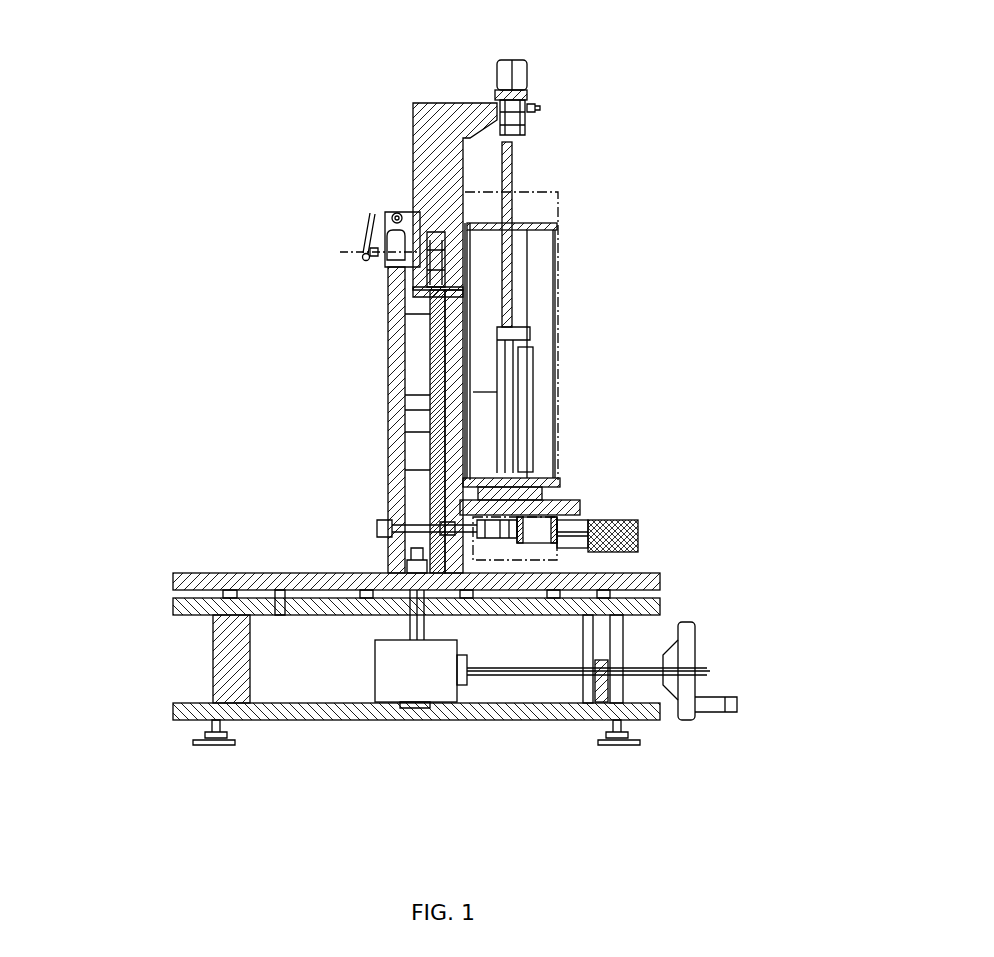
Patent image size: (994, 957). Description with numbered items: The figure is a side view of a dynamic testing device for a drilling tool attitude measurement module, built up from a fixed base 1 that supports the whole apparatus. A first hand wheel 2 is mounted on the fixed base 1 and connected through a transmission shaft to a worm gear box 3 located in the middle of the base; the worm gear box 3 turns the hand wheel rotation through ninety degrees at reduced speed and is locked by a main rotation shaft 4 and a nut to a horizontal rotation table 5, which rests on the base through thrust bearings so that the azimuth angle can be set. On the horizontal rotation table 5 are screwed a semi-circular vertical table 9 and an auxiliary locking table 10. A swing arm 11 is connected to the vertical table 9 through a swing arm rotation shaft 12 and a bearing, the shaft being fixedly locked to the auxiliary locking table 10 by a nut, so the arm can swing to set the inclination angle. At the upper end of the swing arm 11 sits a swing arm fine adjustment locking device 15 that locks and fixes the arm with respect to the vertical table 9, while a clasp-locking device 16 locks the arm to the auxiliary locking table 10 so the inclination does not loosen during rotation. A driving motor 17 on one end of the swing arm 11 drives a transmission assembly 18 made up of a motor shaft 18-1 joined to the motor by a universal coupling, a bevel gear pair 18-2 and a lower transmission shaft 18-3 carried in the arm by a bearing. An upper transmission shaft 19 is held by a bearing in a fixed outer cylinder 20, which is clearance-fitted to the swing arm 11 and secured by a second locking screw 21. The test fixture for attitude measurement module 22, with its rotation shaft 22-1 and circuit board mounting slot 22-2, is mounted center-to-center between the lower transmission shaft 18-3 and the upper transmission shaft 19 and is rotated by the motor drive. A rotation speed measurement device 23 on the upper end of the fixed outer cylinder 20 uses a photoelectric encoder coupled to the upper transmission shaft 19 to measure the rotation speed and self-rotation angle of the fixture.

The fixed base 1 is at (223, 688).
The first hand wheel 2 is at (687, 670).
The worm gear box 3 is at (398, 683).
The main rotation shaft 4 is at (417, 628).
The horizontal rotation table 5 is at (655, 573).
The vertical table 9 is at (432, 356).
The auxiliary locking table 10 is at (445, 418).
The swing arm 11 is at (445, 162).
The swing arm rotation shaft 12 is at (405, 540).
The swing arm fine adjustment locking device 15 is at (395, 302).
The clasp-locking device 16 is at (372, 210).
The driving motor 17 is at (618, 527).
The transmission assembly 18 is at (557, 486).
The motor shaft 18-1 is at (522, 522).
The bevel gear pair 18-2 is at (500, 535).
The lower transmission shaft 18-3 is at (478, 486).
The upper transmission shaft 19 is at (528, 99).
The fixed outer cylinder 20 is at (524, 133).
The second locking screw 21 is at (540, 109).
The test fixture for attitude measurement module 22 is at (560, 258).
The rotation shaft 22-1 is at (512, 325).
The circuit board mounting slot 22-2 is at (500, 385).
The rotation speed measurement device 23 is at (518, 84).